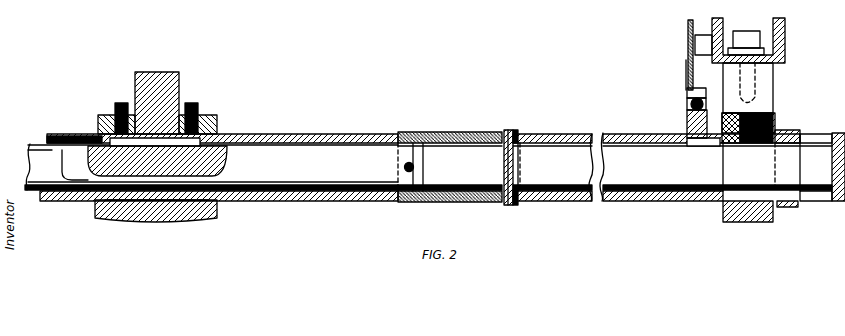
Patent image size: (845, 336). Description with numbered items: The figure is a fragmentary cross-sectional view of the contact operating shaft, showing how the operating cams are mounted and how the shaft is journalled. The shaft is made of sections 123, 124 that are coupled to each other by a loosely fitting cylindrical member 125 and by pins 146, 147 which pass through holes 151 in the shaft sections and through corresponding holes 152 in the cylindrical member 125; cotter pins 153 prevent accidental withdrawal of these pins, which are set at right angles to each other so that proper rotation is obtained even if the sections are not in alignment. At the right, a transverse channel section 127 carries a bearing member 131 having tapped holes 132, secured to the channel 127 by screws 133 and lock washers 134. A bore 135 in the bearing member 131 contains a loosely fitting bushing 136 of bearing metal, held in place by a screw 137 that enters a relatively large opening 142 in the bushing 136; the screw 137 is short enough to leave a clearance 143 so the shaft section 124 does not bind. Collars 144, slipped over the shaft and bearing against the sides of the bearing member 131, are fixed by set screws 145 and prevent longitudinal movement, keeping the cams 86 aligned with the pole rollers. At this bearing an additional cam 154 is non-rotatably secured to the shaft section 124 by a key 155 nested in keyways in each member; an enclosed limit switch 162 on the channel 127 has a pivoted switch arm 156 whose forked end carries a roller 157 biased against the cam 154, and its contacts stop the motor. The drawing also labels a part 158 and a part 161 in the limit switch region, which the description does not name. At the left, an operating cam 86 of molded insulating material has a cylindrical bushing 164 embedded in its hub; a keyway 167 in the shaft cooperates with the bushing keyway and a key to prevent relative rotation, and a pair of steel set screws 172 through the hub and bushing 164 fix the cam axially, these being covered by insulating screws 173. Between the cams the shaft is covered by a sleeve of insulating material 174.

The operating cam 86 is at (217, 214).
The shaft section 123 is at (340, 201).
The shaft section 124 is at (650, 201).
The cylindrical member 125 is at (480, 115).
The transverse channel section 127 is at (786, 40).
The bearing member 131 is at (770, 92).
The tapped holes 132 is at (753, 80).
The screws 133 is at (734, 31).
The lock washers 134 is at (762, 48).
The bore 135 is at (775, 122).
The bushing 136 is at (775, 130).
The screw 137 is at (756, 115).
The opening 142 is at (731, 143).
The clearance 143 is at (748, 144).
The collar 144 is at (790, 207).
The set screw 145 is at (790, 131).
The pin 146 is at (411, 162).
The pin 147 is at (512, 205).
The holes 151 is at (506, 130).
The holes 152 is at (518, 198).
The cotter pins 153 is at (514, 131).
The cam 154 is at (685, 118).
The key 155 is at (690, 147).
The pivoted switch arm 156 is at (686, 78).
The roller 157 is at (688, 100).
The fitting 158 is at (700, 92).
The stem 161 is at (686, 60).
The enclosed limit switch 162 is at (705, 35).
The cylindrical bushing 164 is at (177, 203).
The keyway 167 is at (66, 148).
The set screws 172 is at (108, 117).
The insulating screws 173 is at (121, 104).
The insulating sleeve 174 is at (350, 104).